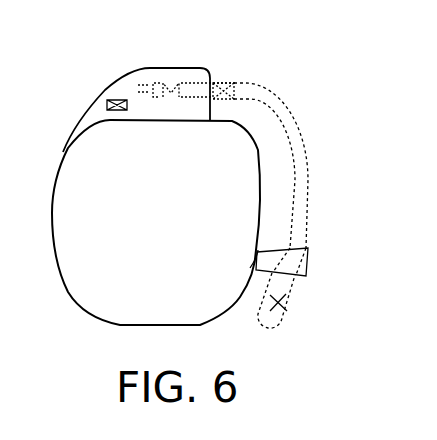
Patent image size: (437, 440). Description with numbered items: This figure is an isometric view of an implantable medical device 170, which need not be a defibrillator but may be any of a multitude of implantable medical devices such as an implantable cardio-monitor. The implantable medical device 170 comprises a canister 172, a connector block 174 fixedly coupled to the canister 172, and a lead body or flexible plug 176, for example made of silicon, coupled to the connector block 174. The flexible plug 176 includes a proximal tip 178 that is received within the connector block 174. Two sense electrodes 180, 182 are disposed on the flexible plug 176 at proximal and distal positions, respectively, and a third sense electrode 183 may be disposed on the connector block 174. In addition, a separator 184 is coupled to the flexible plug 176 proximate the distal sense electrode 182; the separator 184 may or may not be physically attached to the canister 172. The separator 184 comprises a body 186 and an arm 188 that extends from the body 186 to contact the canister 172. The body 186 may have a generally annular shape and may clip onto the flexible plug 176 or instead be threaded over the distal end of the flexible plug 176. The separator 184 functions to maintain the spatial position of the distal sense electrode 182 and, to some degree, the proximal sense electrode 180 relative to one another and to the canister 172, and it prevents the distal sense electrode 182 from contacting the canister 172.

The implantable medical device 170 is at (321, 90).
The canister 172 is at (172, 233).
The connector block 174 is at (108, 92).
The flexible plug 176 is at (306, 174).
The proximal tip 178 is at (188, 89).
The sense electrode 180 is at (218, 84).
The sense electrode 182 is at (288, 309).
The third sense electrode 183 is at (117, 111).
The separator 184 is at (316, 260).
The body 186 is at (298, 275).
The arm 188 is at (255, 262).